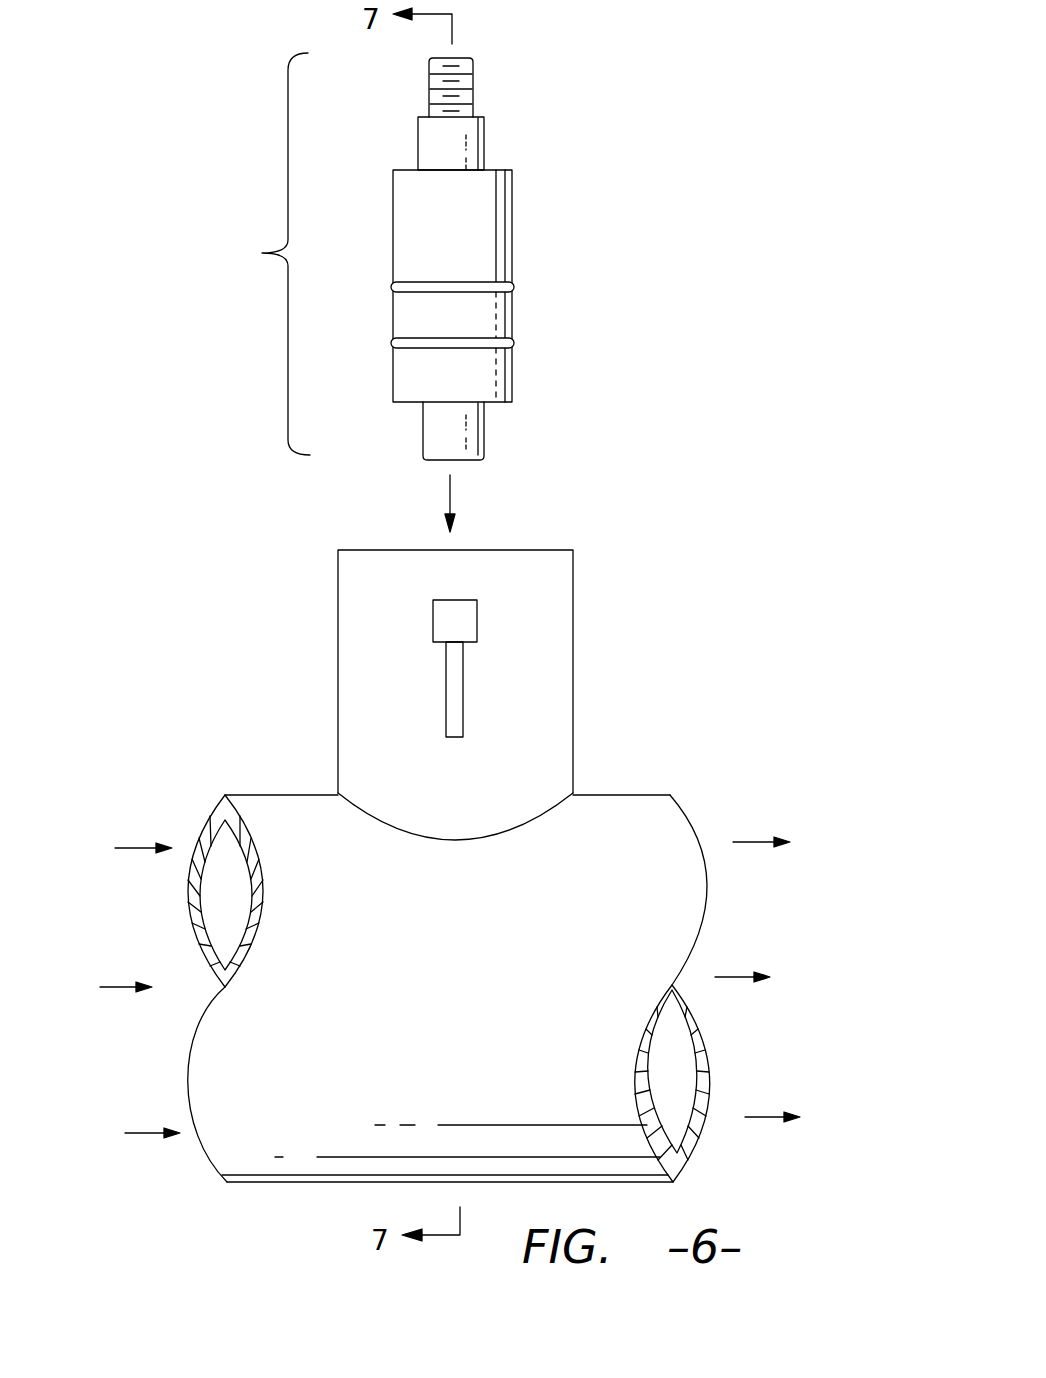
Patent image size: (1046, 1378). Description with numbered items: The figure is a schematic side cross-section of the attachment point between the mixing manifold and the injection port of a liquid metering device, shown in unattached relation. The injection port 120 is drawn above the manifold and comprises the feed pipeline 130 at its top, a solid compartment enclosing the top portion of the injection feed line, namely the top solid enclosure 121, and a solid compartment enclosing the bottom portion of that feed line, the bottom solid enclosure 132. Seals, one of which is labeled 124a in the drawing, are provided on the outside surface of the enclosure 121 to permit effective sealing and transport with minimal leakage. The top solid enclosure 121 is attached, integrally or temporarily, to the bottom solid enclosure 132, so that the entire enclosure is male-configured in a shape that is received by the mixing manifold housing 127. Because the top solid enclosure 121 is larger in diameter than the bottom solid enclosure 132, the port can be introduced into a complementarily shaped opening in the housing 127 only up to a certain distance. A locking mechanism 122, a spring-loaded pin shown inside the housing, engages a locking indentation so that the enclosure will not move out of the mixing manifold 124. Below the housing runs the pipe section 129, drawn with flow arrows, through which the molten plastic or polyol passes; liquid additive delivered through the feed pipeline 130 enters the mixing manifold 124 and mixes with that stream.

The injection port 120 is at (256, 254).
The feed pipeline 130 is at (474, 82).
The top solid enclosure 121 is at (513, 202).
The mixing manifold 124 is at (514, 287).
The second sealing ring 124a is at (514, 345).
The bottom solid enclosure 132 is at (485, 432).
The mixing manifold housing 127 is at (573, 575).
The locking mechanism 122 is at (463, 655).
The pipe section 129 is at (275, 795).